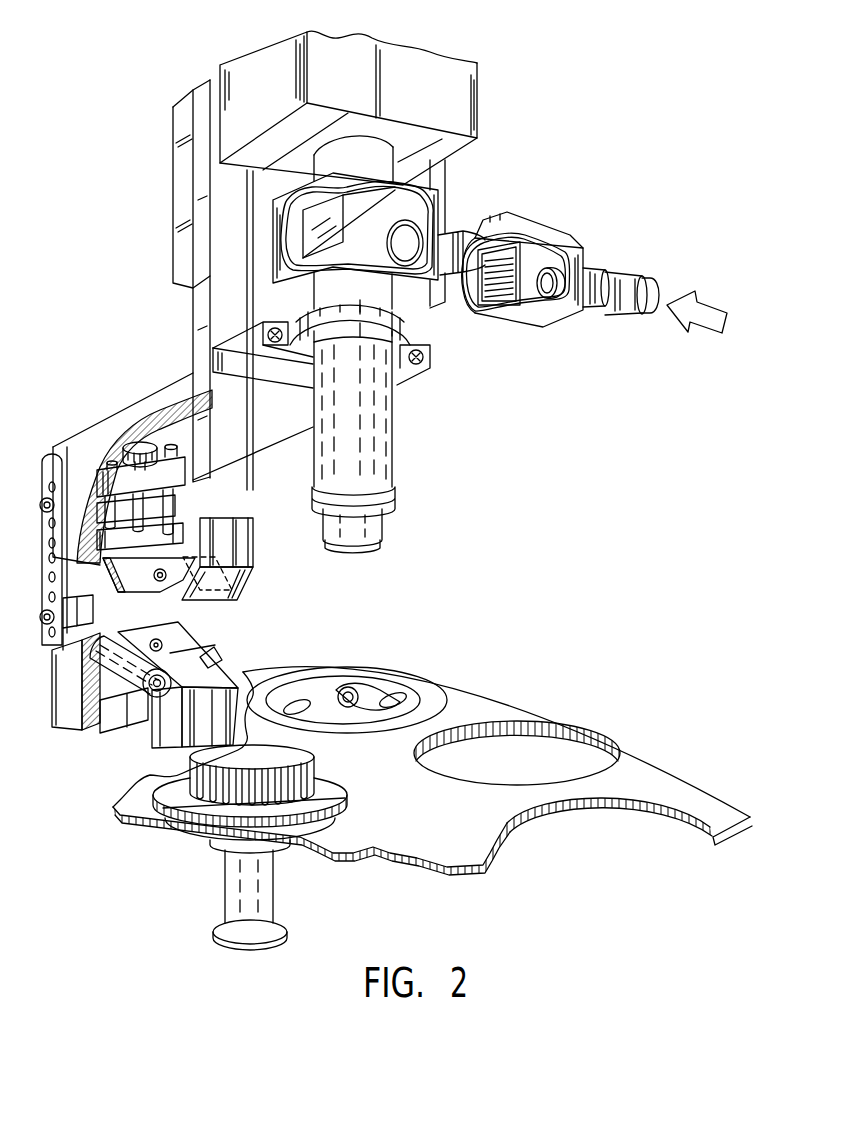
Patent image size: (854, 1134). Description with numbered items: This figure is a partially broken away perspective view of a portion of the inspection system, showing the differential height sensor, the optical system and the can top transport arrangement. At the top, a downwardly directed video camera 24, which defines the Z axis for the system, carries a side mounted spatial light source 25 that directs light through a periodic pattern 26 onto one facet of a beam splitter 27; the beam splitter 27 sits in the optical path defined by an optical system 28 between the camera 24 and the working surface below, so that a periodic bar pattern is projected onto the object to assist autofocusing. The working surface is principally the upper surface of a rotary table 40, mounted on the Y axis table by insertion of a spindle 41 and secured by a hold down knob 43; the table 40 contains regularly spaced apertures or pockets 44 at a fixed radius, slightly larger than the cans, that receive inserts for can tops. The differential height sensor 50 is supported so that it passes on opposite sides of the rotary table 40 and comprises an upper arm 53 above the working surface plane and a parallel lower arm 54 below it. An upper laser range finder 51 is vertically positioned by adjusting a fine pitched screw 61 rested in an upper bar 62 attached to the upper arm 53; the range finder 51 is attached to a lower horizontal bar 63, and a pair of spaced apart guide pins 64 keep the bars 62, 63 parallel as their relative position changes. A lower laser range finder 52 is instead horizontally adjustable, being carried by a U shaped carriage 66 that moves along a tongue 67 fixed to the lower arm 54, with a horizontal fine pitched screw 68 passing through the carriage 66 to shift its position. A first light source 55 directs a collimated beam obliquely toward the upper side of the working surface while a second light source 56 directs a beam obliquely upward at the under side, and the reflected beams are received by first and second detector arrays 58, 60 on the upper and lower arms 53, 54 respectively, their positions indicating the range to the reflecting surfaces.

The video camera 24 is at (423, 68).
The spatial light source 25 is at (563, 258).
The periodic pattern 26 is at (503, 270).
The beam splitter 27 is at (392, 193).
The optical system 28 is at (380, 428).
The rotary table 40 is at (647, 773).
The spindle 41 is at (183, 838).
The hold down knob 43 is at (293, 767).
The apertures or pockets 44 is at (585, 745).
The differential height sensor 50 is at (250, 612).
The upper laser range finder 51 is at (240, 588).
The lower laser range finder 52 is at (222, 662).
The upper arm 53 is at (157, 477).
The lower arm 54 is at (73, 690).
The first light source 55 is at (157, 577).
The second light source 56 is at (157, 647).
The first detector array 58 is at (232, 562).
The second detector array 60 is at (193, 670).
The fine pitched screw 61 is at (80, 530).
The upper bar 62 is at (90, 442).
The lower horizontal bar 63 is at (133, 543).
The guide pins 64 is at (175, 508).
The U shaped carriage 66 is at (157, 725).
The tongue 67 is at (103, 723).
The horizontal fine pitched screw 68 is at (87, 642).